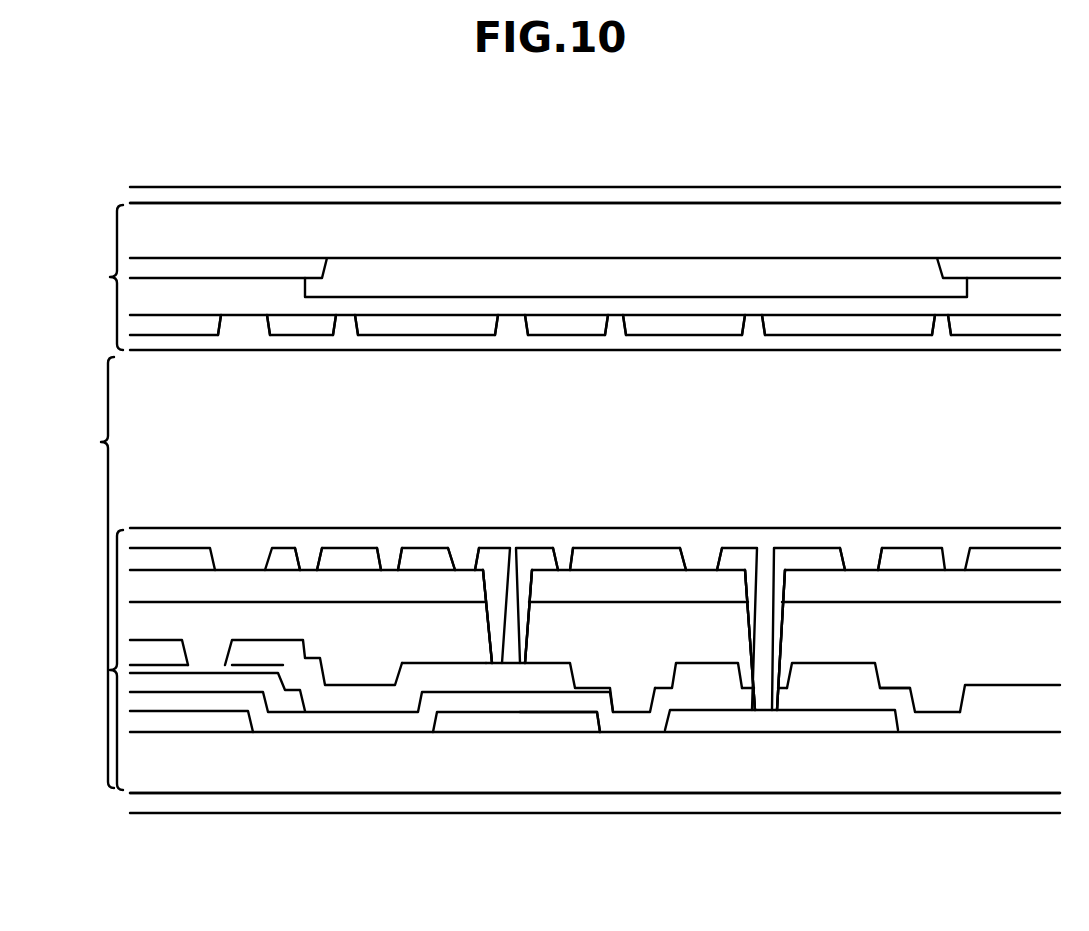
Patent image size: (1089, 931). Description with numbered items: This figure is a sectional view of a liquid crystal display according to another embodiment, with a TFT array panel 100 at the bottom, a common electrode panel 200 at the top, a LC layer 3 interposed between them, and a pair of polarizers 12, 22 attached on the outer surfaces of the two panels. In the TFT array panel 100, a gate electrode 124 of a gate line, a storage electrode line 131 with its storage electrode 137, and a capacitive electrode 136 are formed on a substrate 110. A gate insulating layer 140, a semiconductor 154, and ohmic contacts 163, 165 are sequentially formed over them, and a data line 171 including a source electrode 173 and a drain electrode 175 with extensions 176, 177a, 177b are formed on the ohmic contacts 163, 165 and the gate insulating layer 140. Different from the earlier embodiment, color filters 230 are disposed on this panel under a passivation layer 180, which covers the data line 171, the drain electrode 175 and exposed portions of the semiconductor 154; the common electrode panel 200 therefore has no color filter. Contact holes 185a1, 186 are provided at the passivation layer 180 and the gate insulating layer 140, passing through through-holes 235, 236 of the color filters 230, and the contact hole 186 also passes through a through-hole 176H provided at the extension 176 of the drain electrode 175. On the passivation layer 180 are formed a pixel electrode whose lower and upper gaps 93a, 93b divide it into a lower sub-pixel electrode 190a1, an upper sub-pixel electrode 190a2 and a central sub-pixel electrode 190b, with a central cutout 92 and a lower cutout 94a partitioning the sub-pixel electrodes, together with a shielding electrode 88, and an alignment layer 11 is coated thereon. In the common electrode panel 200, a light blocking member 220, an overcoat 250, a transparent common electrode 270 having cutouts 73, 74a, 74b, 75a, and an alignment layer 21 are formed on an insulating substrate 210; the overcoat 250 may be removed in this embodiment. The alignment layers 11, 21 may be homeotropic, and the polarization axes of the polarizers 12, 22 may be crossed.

The LC layer 3 is at (100, 572).
The alignment layer 11 is at (982, 537).
The polarizer 12 is at (138, 806).
The alignment layer 21 is at (170, 342).
The polarizer 22 is at (135, 190).
The cutout 73 is at (610, 332).
The cutout 74a is at (345, 332).
The cutout 74b is at (940, 332).
The cutout 75a is at (225, 340).
The shielding electrode 88 is at (188, 557).
The central cutout 92 is at (683, 557).
The lower gap 93a is at (383, 560).
The upper gap 93b is at (870, 560).
The lower cutout 94a is at (308, 560).
The TFT array panel 100 is at (93, 660).
The substrate 110 is at (920, 765).
The gate electrode 124 is at (188, 720).
The storage electrode line 131 is at (465, 715).
The capacitive electrode 136 is at (748, 716).
The storage electrode 137 is at (577, 715).
The gate insulating layer 140 is at (618, 703).
The semiconductor 154 is at (235, 682).
The ohmic contact 163 is at (150, 668).
The ohmic contact 165 is at (290, 688).
The data line 171 is at (1005, 693).
The source electrode 173 is at (154, 652).
The drain electrode 175 is at (255, 652).
The extension 176 is at (838, 680).
The through-hole 176H is at (777, 647).
The extension 177a is at (433, 680).
The extension 177b is at (543, 678).
The passivation layer 180 is at (340, 585).
The contact hole 185a1 is at (500, 615).
The contact hole 186 is at (767, 547).
The lower sub-pixel electrode 190a1 is at (283, 562).
The upper sub-pixel electrode 190a2 is at (923, 560).
The central sub-pixel electrode 190b is at (420, 562).
The common electrode panel 200 is at (93, 277).
The insulating substrate 210 is at (697, 235).
The light blocking member 220 is at (236, 268).
The color filter 230 is at (445, 277).
The through-hole 235 is at (487, 560).
The through-hole 236 is at (750, 612).
The overcoat 250 is at (570, 307).
The common electrode 270 is at (177, 327).